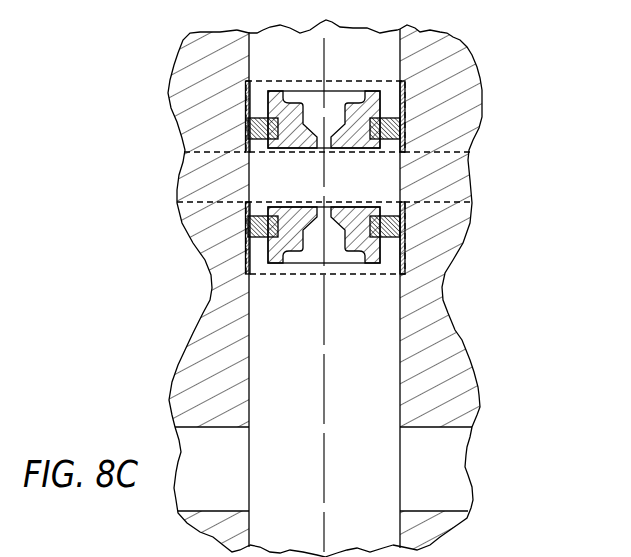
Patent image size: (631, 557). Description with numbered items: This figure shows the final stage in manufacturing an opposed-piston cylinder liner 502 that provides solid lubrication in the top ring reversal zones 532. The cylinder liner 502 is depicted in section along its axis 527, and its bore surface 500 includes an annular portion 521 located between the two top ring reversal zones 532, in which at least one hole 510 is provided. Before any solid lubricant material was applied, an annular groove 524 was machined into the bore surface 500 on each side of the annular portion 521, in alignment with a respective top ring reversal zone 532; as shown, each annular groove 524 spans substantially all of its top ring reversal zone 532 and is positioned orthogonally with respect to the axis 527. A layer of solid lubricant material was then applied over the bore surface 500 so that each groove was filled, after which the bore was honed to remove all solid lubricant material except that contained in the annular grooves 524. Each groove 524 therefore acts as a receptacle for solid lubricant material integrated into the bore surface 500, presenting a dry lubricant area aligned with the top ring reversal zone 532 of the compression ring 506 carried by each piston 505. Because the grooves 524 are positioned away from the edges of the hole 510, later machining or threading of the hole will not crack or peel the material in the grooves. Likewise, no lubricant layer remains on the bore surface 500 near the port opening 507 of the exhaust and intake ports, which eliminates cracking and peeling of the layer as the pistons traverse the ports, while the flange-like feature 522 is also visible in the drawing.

The bore surface 500 is at (400, 390).
The cylinder liner 502 is at (436, 534).
The piston 505 is at (381, 98).
The compression ring 506 is at (382, 120).
The port opening 507 is at (452, 470).
The hole 510 is at (198, 172).
The annular portion 521 is at (360, 178).
The flange 522 is at (401, 137).
The annular groove 524 is at (403, 85).
The axis 527 is at (325, 498).
The top ring reversal zone 532 is at (256, 103).